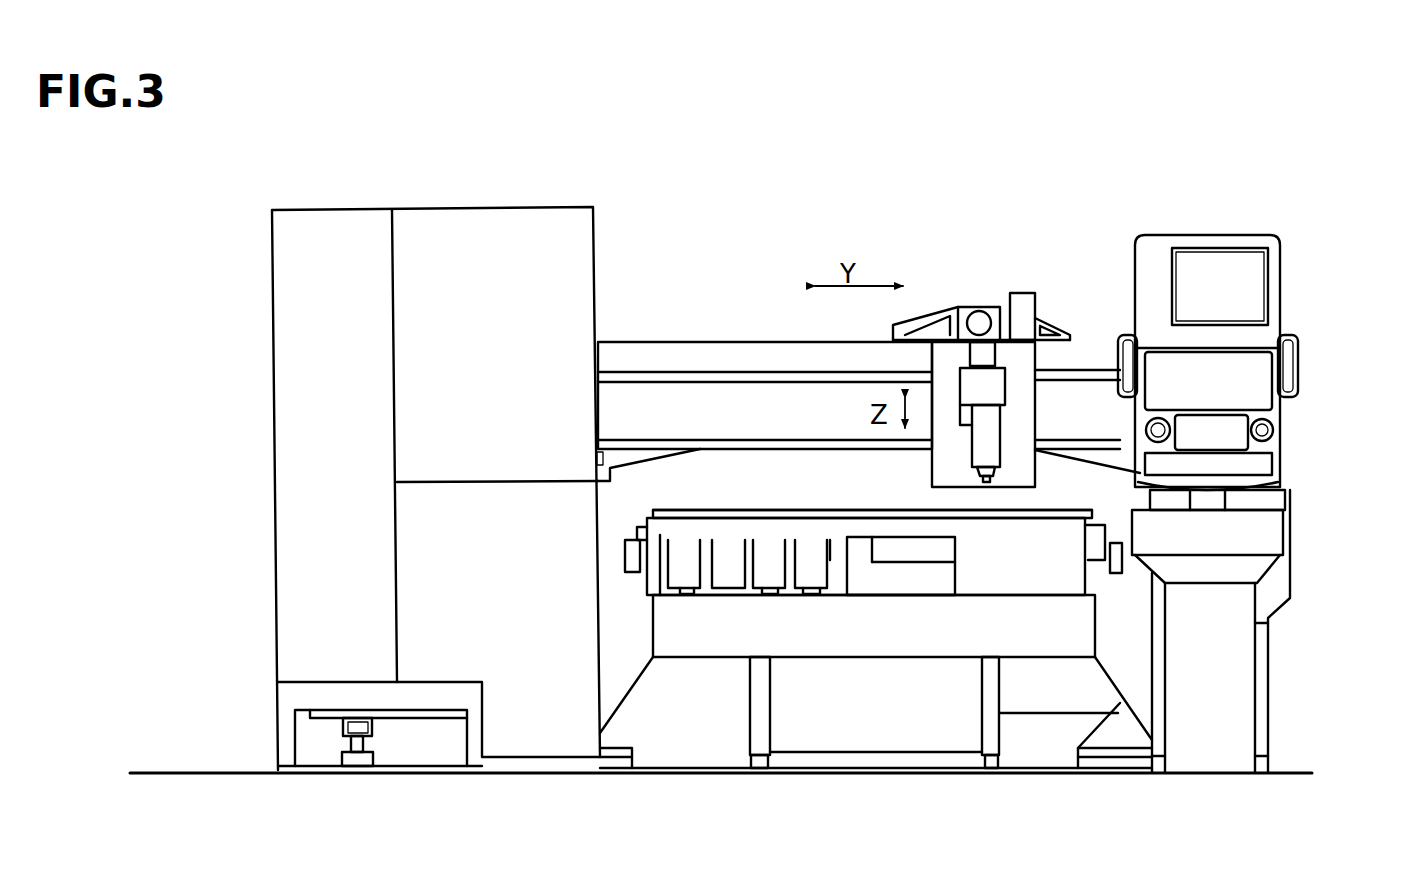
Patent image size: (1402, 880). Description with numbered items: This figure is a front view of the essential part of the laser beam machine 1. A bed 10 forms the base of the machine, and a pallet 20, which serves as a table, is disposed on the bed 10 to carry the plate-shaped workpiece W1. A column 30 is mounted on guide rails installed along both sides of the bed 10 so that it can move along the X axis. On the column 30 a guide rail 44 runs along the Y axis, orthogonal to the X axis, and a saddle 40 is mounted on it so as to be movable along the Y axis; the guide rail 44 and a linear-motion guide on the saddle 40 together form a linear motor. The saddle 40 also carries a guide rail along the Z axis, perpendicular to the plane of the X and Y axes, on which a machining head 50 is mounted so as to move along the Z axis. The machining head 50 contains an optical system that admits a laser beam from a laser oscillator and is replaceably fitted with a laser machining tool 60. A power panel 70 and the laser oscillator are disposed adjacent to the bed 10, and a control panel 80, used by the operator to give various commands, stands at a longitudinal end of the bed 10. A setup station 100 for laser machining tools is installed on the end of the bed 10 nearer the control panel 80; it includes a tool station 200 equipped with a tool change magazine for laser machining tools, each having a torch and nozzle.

The laser beam machine 1 is at (940, 235).
The bed 10 is at (1262, 687).
The pallet 20 is at (1095, 553).
The column 30 is at (770, 363).
The saddle 40 is at (962, 312).
The guide rail 44 is at (678, 382).
The machining head 50 is at (984, 388).
The laser machining tool 60 is at (986, 445).
The power panel 70 is at (436, 488).
The control panel 80 is at (1266, 334).
The setup station 100 is at (1018, 582).
The tool station 200 is at (714, 632).
The workpiece W1 is at (796, 515).